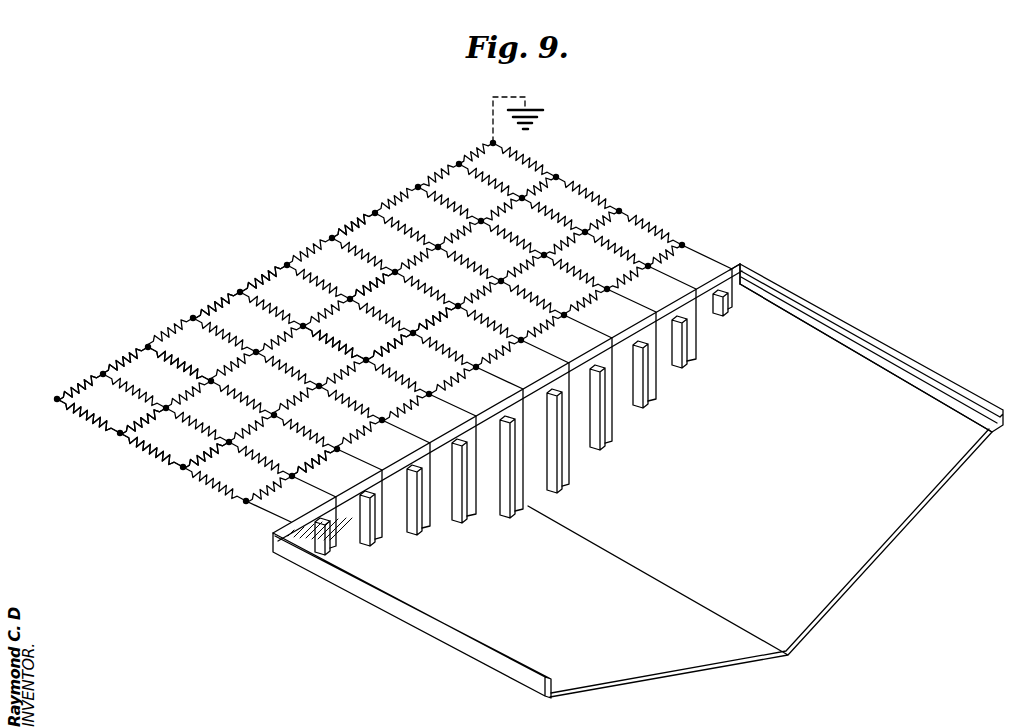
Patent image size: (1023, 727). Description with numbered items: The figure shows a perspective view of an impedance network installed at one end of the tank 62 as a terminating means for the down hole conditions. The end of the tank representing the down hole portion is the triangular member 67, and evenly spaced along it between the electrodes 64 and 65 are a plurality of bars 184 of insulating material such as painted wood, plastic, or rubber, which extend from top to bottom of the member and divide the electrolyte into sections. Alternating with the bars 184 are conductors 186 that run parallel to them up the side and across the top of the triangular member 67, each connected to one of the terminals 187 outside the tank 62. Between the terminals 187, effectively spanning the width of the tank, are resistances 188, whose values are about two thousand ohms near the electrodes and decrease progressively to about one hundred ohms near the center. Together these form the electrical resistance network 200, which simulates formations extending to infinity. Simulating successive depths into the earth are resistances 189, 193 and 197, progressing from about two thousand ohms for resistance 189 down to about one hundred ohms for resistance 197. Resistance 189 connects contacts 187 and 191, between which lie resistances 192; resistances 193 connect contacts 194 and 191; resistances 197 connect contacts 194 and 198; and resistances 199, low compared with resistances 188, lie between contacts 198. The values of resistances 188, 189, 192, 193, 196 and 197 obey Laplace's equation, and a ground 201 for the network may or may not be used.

The tank 62 is at (784, 471).
The electrode 64 is at (552, 687).
The electrode 65 is at (818, 330).
The triangular member 67 is at (714, 265).
The bars 184 is at (460, 522).
The conductors 186 is at (395, 438).
The terminals 187 is at (266, 511).
The resistances 188 is at (490, 387).
The resistance 189 is at (372, 378).
The contacts 191 is at (178, 470).
The resistances 192 is at (452, 308).
The resistances 193 is at (358, 356).
The contacts 194 is at (119, 436).
The resistances 196 is at (336, 287).
The resistances 197 is at (158, 358).
The contacts 198 is at (195, 316).
The resistances 199 is at (330, 237).
The electrical resistance network 200 is at (631, 197).
The ground 201 is at (547, 113).